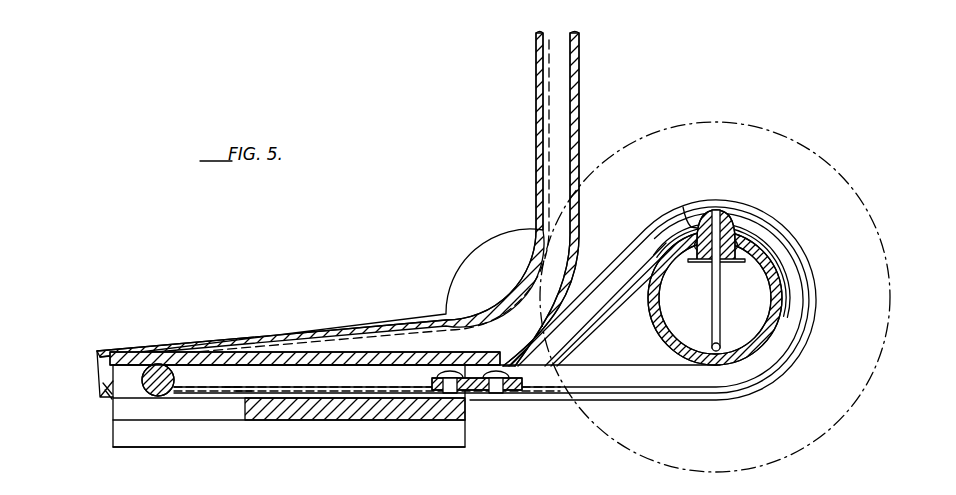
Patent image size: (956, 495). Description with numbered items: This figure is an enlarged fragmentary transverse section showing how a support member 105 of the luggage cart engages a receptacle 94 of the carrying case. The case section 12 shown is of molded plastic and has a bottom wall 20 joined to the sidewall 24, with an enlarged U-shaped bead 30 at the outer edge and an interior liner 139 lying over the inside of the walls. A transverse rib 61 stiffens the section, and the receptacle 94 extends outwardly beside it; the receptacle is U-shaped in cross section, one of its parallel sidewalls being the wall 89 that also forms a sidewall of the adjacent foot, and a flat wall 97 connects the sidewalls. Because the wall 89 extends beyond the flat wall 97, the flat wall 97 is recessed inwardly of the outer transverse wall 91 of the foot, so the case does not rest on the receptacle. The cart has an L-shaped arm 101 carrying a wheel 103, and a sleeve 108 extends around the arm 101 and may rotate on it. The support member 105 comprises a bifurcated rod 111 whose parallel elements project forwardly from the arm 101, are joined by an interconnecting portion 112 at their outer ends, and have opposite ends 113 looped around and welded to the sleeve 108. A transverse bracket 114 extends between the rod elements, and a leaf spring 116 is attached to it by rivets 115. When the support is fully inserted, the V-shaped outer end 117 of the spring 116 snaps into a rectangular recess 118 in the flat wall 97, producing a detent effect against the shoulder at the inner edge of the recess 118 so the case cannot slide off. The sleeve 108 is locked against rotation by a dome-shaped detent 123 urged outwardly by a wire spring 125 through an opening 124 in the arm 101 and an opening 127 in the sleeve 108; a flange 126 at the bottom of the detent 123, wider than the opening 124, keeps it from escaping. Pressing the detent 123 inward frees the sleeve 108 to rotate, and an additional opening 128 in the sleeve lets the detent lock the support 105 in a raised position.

The section 12 is at (364, 199).
The liner 139 is at (536, 70).
The rib 61 is at (582, 88).
The wall 24 is at (552, 118).
The wheel 103 is at (773, 132).
The bottom wall 20 is at (276, 352).
The bead 30 is at (99, 378).
The interconnecting portion 112 is at (160, 364).
The sidewall 89 is at (112, 390).
The receptacle 94 is at (124, 424).
The flat wall 97 is at (395, 430).
The transverse wall 91 is at (408, 448).
The leaf spring 116 is at (336, 387).
The V-shaped outer end 117 is at (233, 395).
The recess 118 is at (240, 400).
The bracket 114 is at (522, 392).
The rivets 115 is at (500, 393).
The ends 113 is at (814, 312).
The bifurcated rod 111 is at (533, 398).
The support member 105 is at (553, 402).
The opening 128 is at (652, 314).
The arm 101 is at (666, 340).
The sleeve 108 is at (780, 276).
The detent 123 is at (735, 215).
The opening 124 is at (738, 242).
The opening 127 is at (683, 207).
The flange 126 is at (706, 263).
The wire spring 125 is at (722, 294).